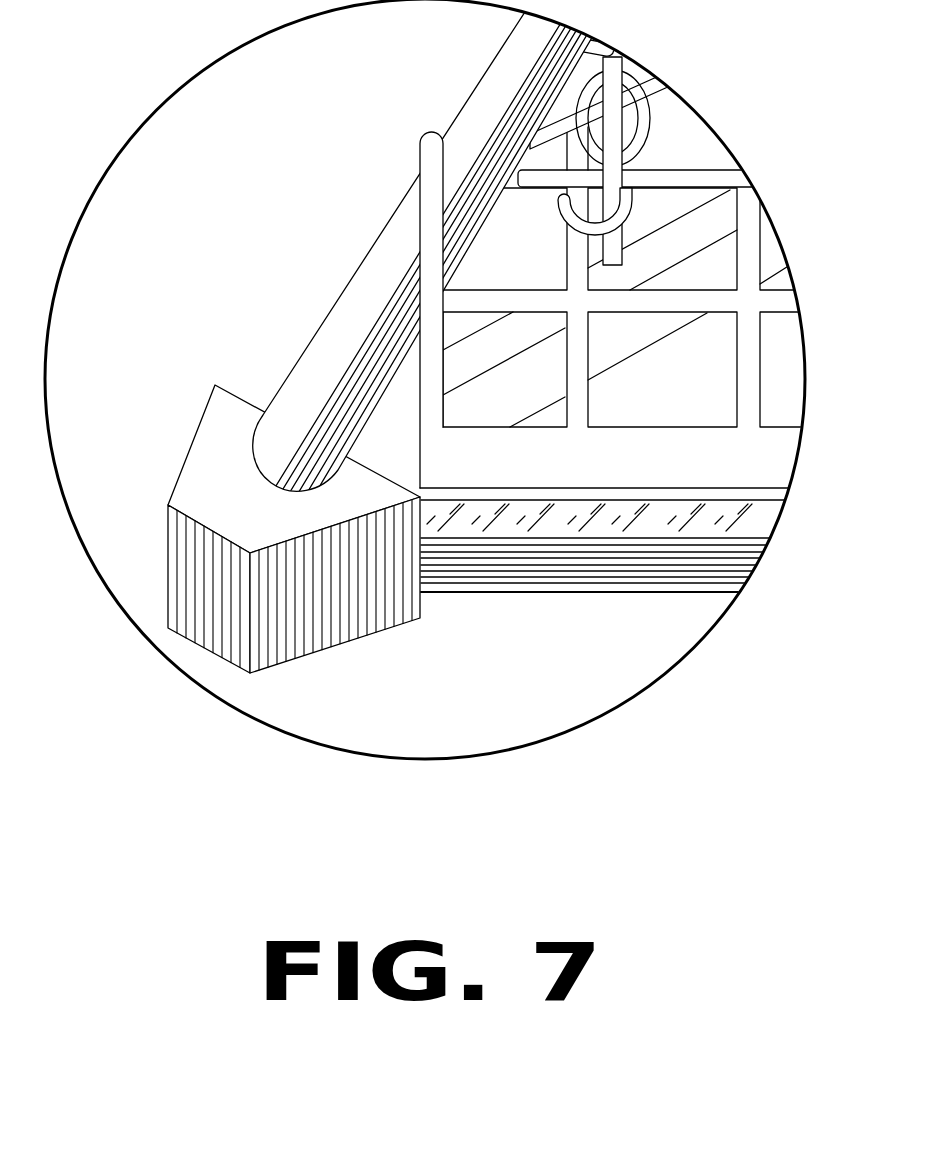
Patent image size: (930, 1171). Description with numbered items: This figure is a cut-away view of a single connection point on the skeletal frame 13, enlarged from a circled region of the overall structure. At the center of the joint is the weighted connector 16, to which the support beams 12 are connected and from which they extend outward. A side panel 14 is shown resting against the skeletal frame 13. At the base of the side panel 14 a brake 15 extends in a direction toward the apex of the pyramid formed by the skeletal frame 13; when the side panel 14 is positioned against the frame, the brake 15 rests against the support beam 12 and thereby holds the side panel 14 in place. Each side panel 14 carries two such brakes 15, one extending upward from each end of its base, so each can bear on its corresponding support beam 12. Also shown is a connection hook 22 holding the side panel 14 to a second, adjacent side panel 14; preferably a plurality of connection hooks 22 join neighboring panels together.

The support beam 12 is at (617, 588).
The skeletal frame 13 is at (240, 372).
The side panel 14 is at (430, 295).
The brake 15 is at (427, 134).
The weighted connector 16 is at (213, 637).
The connection hook 22 is at (557, 205).